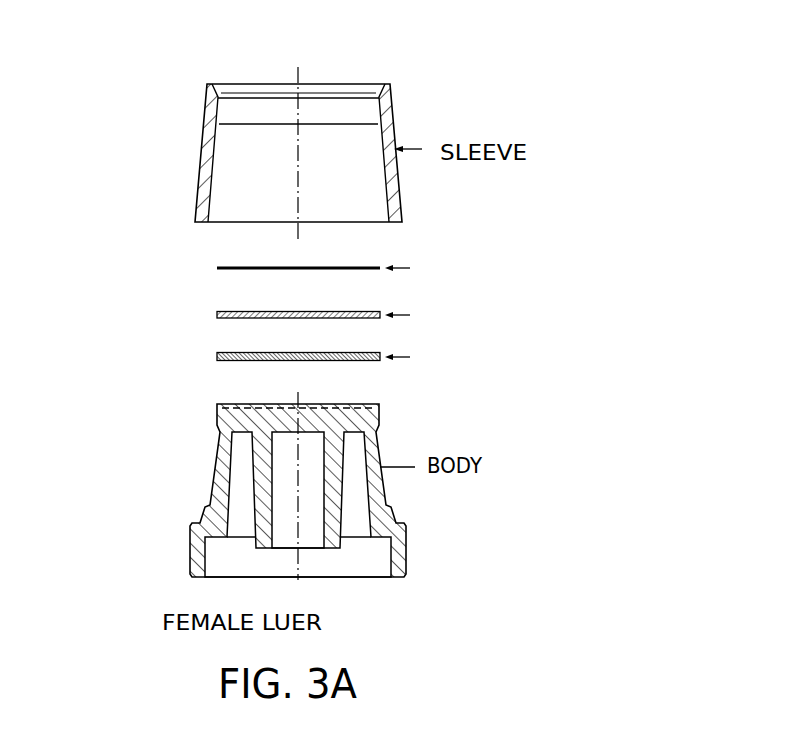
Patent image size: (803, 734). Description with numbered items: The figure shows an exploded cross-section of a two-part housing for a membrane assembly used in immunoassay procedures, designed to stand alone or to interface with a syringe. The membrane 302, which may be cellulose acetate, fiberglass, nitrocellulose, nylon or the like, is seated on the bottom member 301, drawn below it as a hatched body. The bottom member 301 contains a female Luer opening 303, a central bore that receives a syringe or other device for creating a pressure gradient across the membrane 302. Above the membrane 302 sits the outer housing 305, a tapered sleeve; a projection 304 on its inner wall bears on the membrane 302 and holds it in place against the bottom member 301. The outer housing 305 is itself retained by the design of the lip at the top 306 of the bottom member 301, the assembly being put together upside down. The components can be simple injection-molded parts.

The bottom member 301 is at (225, 402).
The membrane 302 is at (607, 255).
The female Luer opening 303 is at (299, 552).
The projection 304 is at (228, 95).
The outer housing 305 is at (199, 152).
The lip at the top 306 is at (394, 417).